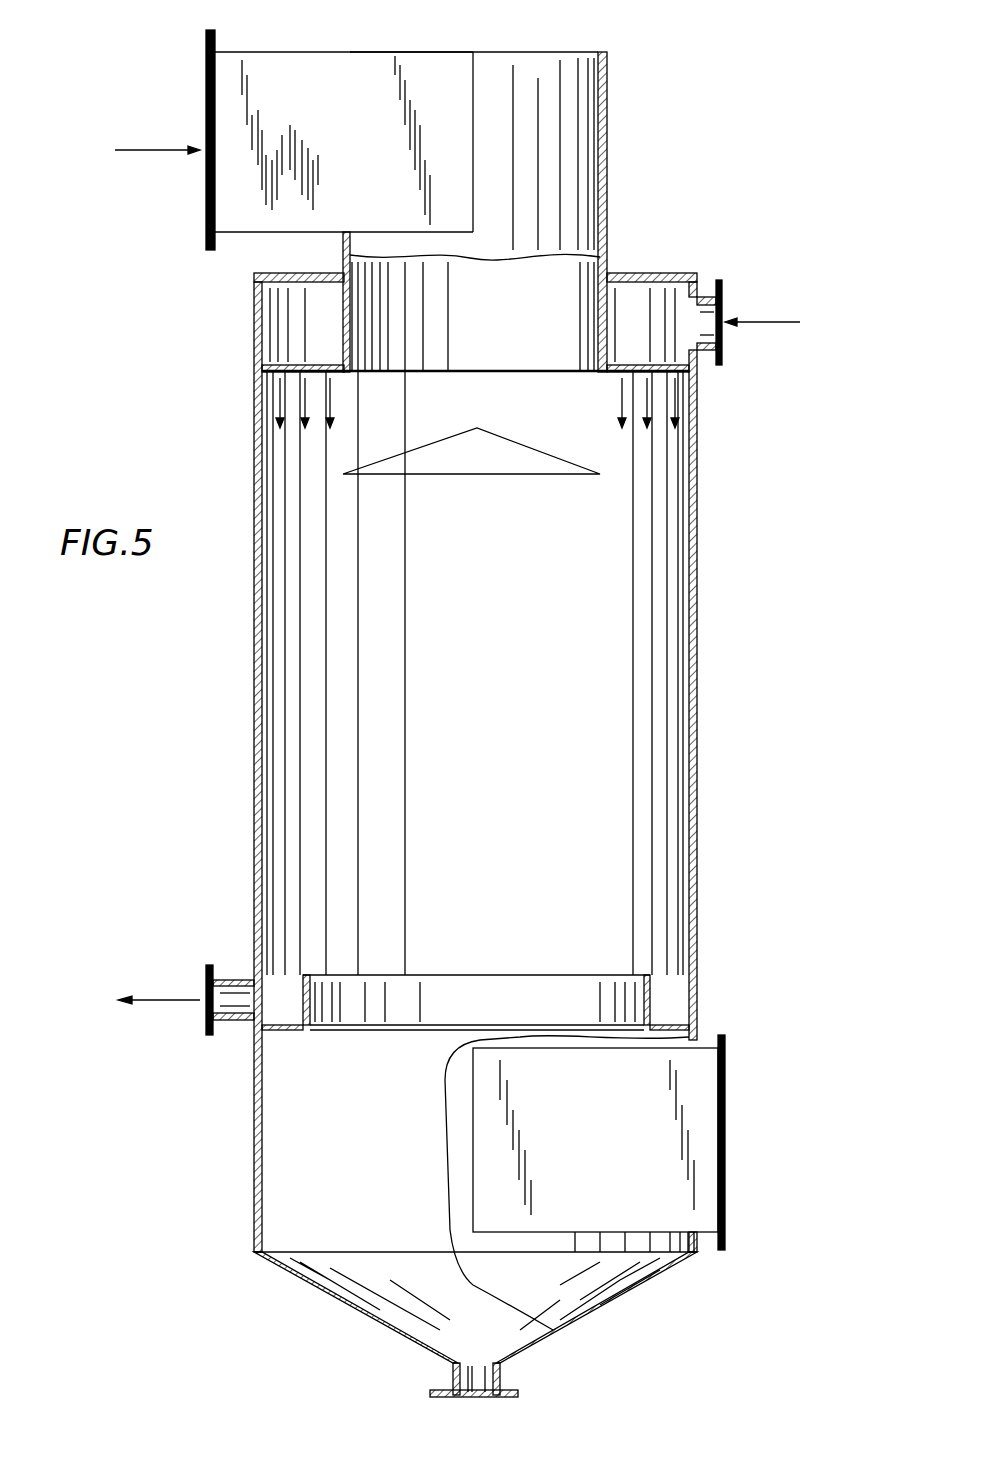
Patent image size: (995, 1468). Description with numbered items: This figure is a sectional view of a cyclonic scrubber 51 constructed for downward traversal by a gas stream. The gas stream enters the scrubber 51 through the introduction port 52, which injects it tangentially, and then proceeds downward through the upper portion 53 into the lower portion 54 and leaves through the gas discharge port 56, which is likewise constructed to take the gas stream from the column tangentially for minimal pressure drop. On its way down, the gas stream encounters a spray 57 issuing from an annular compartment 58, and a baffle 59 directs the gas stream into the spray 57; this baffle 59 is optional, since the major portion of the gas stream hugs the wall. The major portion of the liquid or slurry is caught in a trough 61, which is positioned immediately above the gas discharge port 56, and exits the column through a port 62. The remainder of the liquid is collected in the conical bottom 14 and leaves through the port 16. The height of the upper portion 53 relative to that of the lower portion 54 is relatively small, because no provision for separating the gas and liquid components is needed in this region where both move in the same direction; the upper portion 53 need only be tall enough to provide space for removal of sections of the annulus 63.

The conical bottom 14 is at (605, 1305).
The port 16 is at (465, 1398).
The scrubber 51 is at (712, 843).
The introduction port 52 is at (320, 70).
The upper portion 53 is at (608, 162).
The lower portion 54 is at (700, 663).
The gas discharge port 56 is at (727, 1100).
The spray 57 is at (680, 400).
The annular compartment 58 is at (672, 276).
The baffle 59 is at (520, 447).
The trough 61 is at (665, 1012).
The port 62 is at (232, 1022).
The annulus 63 is at (642, 277).